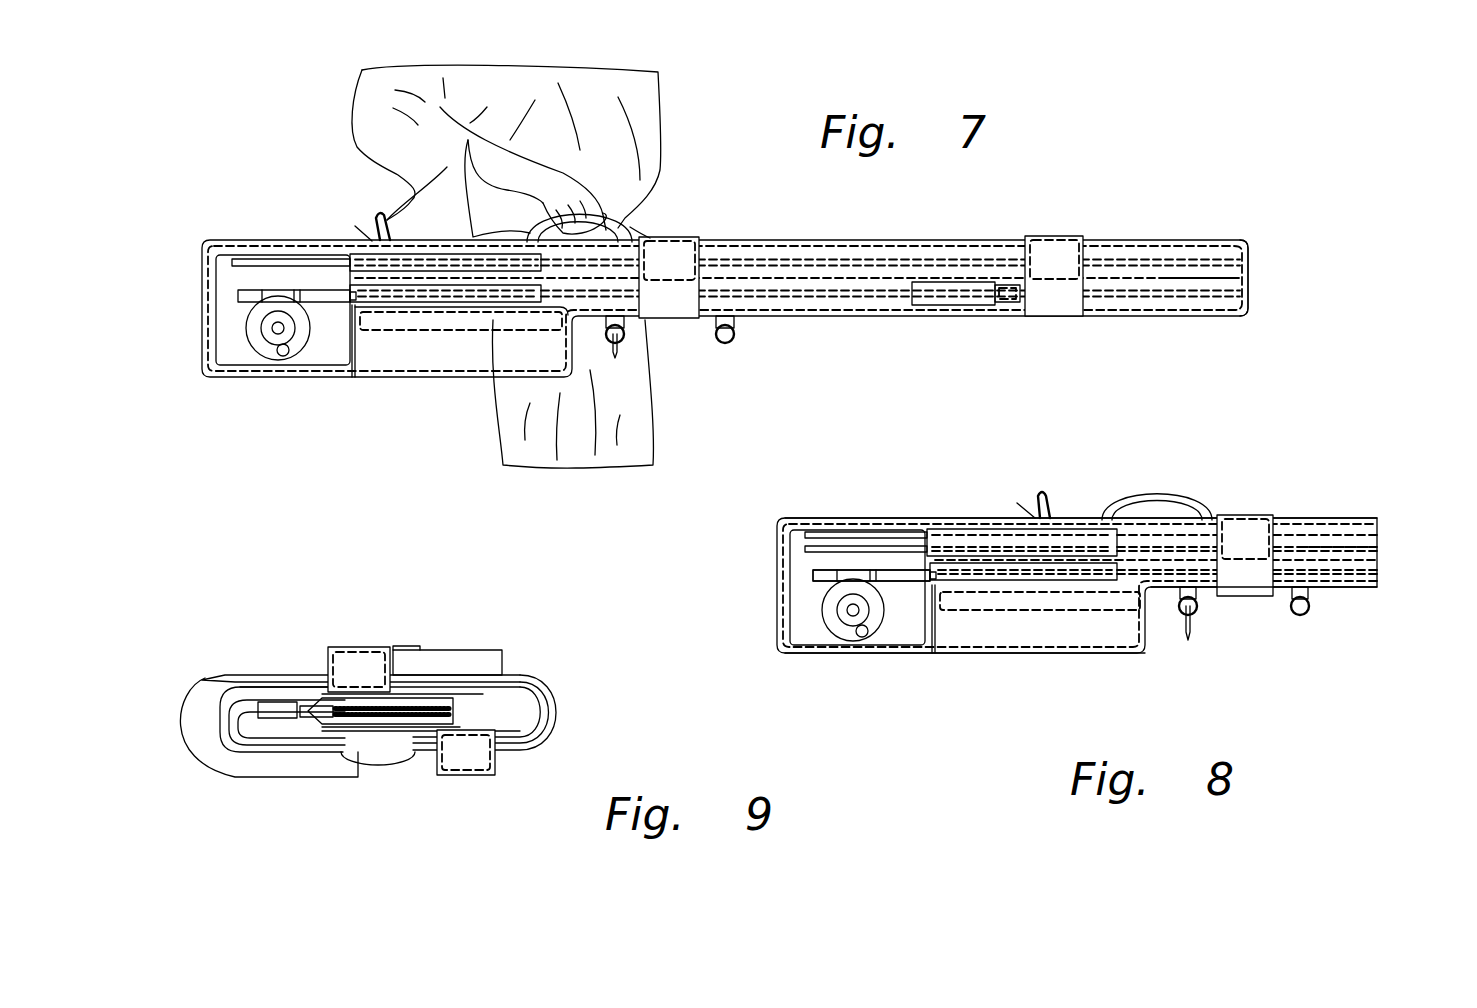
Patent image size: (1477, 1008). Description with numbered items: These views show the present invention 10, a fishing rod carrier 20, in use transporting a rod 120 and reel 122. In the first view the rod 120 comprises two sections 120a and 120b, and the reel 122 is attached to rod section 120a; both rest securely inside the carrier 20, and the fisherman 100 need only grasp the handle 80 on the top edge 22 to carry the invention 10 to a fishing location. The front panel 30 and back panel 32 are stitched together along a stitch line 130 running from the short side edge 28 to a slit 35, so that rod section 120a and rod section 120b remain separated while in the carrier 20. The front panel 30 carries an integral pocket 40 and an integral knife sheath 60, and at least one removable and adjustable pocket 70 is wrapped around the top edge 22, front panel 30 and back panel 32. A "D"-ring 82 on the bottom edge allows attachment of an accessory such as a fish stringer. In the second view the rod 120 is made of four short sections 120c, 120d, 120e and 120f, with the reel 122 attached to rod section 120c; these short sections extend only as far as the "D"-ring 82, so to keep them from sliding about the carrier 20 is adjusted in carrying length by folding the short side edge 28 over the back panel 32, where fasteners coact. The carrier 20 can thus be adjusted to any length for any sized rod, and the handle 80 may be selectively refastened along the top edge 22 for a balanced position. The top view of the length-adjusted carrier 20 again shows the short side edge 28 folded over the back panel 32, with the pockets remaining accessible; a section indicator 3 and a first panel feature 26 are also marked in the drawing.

In FIG. 7, the section line indicator 3 is at (1228, 262).
In FIG. 7, the present invention 10 is at (790, 225).
In FIG. 7, the carrier 20 is at (185, 281).
In FIG. 8, the carrier 20 is at (750, 590).
In FIG. 9, the carrier 20 is at (330, 784).
In FIG. 8, the top edge 22 is at (1335, 518).
In FIG. 8, the first panel 26 is at (777, 565).
In FIG. 9, the first panel 26 is at (440, 695).
In FIG. 7, the short side edge 28 is at (1250, 285).
In FIG. 9, the short side edge 28 is at (205, 680).
In FIG. 8, the front panel 30 is at (1378, 573).
In FIG. 9, the front panel 30 is at (422, 728).
In FIG. 7, the back panel 32 is at (228, 330).
In FIG. 8, the back panel 32 is at (805, 605).
In FIG. 9, the back panel 32 is at (418, 706).
In FIG. 7, the slit 35 is at (360, 343).
In FIG. 8, the slit 35 is at (945, 620).
In FIG. 8, the integral pocket 40 is at (1140, 640).
In FIG. 9, the integral pocket 40 is at (240, 762).
In FIG. 9, the integral knife sheath 60 is at (458, 660).
In FIG. 7, the removable and adjustable pocket 70 is at (861, 277).
In FIG. 8, the removable and adjustable pocket 70 is at (1230, 515).
In FIG. 9, the removable and adjustable pocket 70 is at (352, 668).
In FIG. 7, the handle 80 is at (603, 223).
In FIG. 8, the handle 80 is at (1130, 493).
In FIG. 9, the handle 80 is at (375, 755).
In FIG. 7, the "D"-ring 82 is at (670, 337).
In FIG. 8, the "D"-ring 82 is at (1305, 618).
In FIG. 7, the fisherman 100 is at (378, 98).
In FIG. 7, the rod 120 is at (252, 303).
In FIG. 8, the rod 120 is at (820, 585).
In FIG. 7, the rod section 120a is at (310, 300).
In FIG. 7, the rod section 120b is at (270, 262).
In FIG. 8, the rod section 120c is at (890, 580).
In FIG. 8, the rod section 120d is at (805, 545).
In FIG. 8, the rod section 120e is at (830, 548).
In FIG. 8, the rod section 120f is at (885, 535).
In FIG. 7, the reel 122 is at (272, 349).
In FIG. 8, the reel 122 is at (845, 635).
In FIG. 7, the stitch line 130 is at (1165, 279).
In FIG. 8, the stitch line 130 is at (1360, 555).